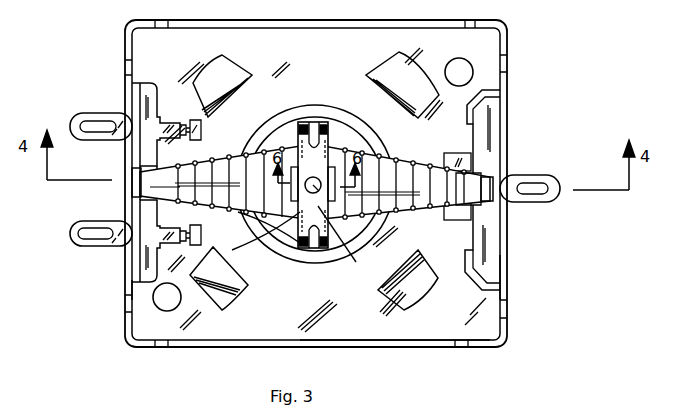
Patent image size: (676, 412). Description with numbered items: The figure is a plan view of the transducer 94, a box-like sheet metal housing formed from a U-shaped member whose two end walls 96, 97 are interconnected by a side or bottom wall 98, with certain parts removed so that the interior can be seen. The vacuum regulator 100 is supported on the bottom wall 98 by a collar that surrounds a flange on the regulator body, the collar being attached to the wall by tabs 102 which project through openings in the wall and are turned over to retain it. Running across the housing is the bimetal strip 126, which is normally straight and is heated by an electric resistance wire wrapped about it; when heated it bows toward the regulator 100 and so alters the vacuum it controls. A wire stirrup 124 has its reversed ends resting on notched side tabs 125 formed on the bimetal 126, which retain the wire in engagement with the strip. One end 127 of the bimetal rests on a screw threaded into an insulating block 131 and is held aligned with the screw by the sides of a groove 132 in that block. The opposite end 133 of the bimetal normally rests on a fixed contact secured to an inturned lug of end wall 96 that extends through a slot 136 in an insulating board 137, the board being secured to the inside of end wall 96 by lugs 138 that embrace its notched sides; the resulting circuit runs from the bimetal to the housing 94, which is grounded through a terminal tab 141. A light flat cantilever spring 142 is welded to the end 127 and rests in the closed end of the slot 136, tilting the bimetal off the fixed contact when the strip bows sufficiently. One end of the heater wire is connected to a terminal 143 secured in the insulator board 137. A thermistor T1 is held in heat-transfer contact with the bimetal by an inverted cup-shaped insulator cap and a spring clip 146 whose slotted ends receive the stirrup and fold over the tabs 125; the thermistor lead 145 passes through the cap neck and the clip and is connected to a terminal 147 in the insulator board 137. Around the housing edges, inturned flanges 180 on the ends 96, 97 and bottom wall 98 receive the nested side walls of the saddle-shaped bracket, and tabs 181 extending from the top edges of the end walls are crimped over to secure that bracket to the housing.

The transducer 94 is at (126, 332).
The end wall 96 is at (127, 284).
The end wall 97 is at (507, 270).
The bottom wall 98 is at (437, 333).
The vacuum regulator 100 is at (288, 136).
The tabs 102 is at (226, 73).
The wire stirrup 124 is at (313, 122).
The side tabs 125 is at (338, 124).
The bimetal strip 126 is at (226, 165).
The end of bimetal 127 is at (470, 181).
The insulating block 131 is at (493, 222).
The groove 132 is at (486, 200).
The opposite end of bimetal 133 is at (146, 184).
The slot 136 is at (136, 168).
The insulating board 137 is at (133, 262).
The lugs 138 is at (160, 82).
The terminal tab 141 is at (524, 175).
The cantilever spring 142 is at (420, 208).
The terminal 143 is at (110, 113).
The thermistor lead 145 is at (233, 250).
The spring clip 146 is at (350, 244).
The terminal 147 is at (70, 234).
The inturned flanges 180 is at (196, 346).
The tabs 181 is at (125, 57).
The thermistor T1 is at (298, 248).